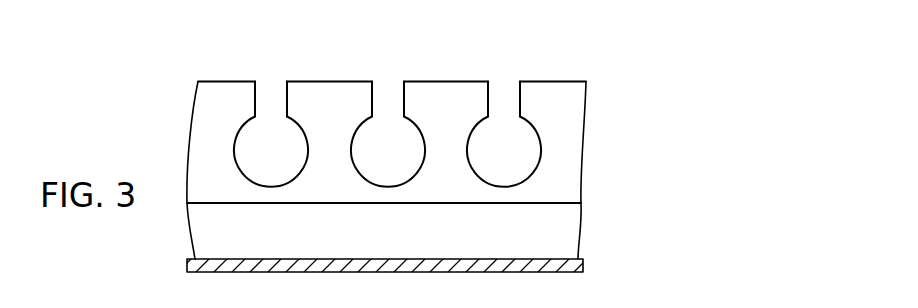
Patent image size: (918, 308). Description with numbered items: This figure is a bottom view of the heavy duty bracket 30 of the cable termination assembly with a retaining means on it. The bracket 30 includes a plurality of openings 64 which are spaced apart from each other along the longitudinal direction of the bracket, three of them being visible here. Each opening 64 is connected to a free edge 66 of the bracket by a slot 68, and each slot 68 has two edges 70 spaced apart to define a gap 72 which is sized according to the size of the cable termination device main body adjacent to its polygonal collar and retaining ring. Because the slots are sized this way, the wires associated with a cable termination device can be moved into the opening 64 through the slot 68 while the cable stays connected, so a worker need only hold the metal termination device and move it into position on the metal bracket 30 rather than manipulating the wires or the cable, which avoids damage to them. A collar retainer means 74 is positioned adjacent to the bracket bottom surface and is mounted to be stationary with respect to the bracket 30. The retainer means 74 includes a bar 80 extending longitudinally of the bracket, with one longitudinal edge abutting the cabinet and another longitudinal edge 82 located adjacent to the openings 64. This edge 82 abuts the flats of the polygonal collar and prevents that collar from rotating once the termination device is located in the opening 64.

The bracket 30 is at (362, 160).
The openings 64 is at (242, 176).
The free edge 66 is at (428, 81).
The slot 68 is at (280, 82).
The edges 70 is at (287, 95).
The gap 72 is at (270, 110).
The collar retainer means 74 is at (205, 240).
The bar 80 is at (487, 240).
The longitudinal edge 82 is at (324, 203).